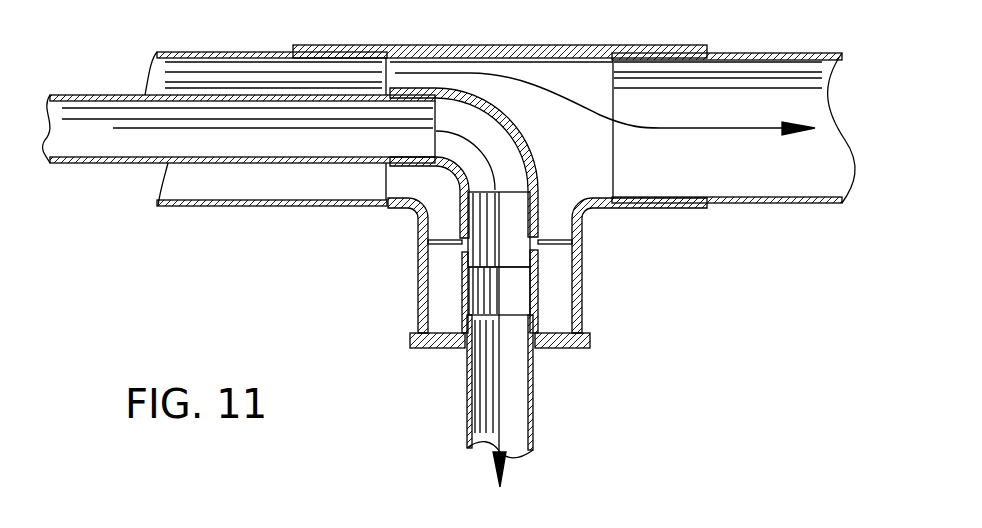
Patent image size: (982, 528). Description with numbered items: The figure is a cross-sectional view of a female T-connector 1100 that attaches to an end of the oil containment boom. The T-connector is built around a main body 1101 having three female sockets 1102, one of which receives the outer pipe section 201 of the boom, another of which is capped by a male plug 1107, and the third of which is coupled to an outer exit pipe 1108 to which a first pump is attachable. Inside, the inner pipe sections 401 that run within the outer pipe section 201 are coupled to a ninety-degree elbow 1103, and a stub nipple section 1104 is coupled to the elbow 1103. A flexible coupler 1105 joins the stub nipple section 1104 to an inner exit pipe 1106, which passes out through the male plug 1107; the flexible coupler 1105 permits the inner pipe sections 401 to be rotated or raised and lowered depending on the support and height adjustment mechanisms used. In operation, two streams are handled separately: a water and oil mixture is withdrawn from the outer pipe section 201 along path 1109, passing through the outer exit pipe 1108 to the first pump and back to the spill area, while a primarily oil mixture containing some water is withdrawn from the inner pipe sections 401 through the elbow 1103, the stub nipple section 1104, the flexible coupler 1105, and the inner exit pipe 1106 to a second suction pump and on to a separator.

The inner pipe sections 401 is at (157, 143).
The outer pipe section 201 is at (265, 187).
The female T-connector 1100 is at (620, 247).
The main body 1101 is at (408, 205).
The female socket 1102 is at (453, 173).
The 90-degree elbow 1103 is at (457, 248).
The stub nipple section 1104 is at (537, 288).
The flexible coupler 1105 is at (468, 383).
The inner exit pipe 1106 is at (555, 342).
The male plug 1107 is at (742, 173).
The outer exit pipe 1108 is at (680, 130).
The path 1109 is at (500, 400).